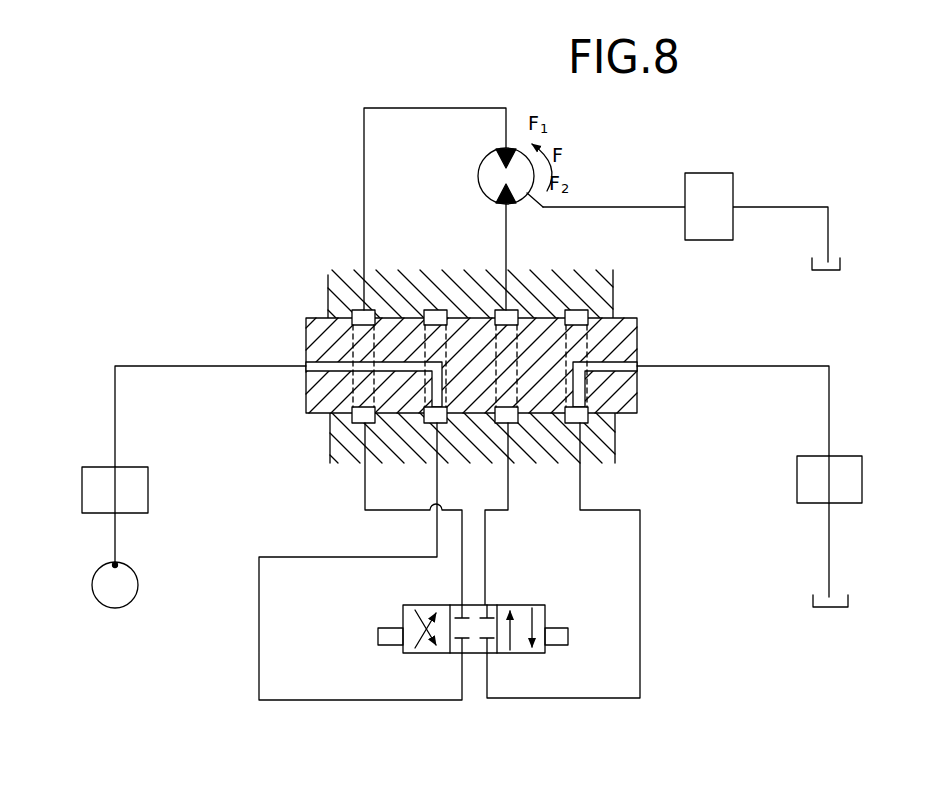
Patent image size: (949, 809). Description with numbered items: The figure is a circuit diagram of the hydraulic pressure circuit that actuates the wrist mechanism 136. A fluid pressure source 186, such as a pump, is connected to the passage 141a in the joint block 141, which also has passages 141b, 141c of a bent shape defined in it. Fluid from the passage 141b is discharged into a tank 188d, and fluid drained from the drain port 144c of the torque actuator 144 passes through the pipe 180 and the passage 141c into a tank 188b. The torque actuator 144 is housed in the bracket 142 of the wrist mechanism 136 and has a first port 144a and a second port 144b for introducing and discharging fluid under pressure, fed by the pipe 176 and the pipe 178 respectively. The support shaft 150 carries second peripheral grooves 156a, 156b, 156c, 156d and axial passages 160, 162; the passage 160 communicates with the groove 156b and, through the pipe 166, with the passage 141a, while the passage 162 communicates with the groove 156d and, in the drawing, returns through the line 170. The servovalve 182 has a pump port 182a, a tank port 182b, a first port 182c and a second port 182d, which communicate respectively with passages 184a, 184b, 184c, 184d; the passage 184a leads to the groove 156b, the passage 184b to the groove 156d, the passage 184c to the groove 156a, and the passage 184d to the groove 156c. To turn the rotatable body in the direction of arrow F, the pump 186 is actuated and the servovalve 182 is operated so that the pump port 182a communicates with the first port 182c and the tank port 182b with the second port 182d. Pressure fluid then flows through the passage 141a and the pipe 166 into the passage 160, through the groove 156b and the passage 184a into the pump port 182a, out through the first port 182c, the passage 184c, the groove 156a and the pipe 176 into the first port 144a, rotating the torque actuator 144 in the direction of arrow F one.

The wrist mechanism 136 is at (310, 148).
The joint block 141 is at (509, 334).
The passage 141a is at (118, 486).
The passage 141b is at (820, 478).
The passage 141c is at (718, 205).
The bracket 142 is at (590, 290).
The torque actuator 144 is at (482, 180).
The first port 144a is at (497, 150).
The second port 144b is at (500, 200).
The drain port 144c is at (528, 196).
The support shaft 150 is at (636, 332).
The second peripheral groove 156a is at (367, 424).
The second peripheral groove 156b is at (442, 425).
The second peripheral groove 156c is at (513, 425).
The second peripheral groove 156d is at (583, 423).
The passage 160 is at (322, 418).
The passage 162 is at (625, 370).
The pipe 166 is at (184, 370).
The conduit 170 is at (738, 360).
The pipe 176 is at (395, 107).
The pipe 178 is at (507, 252).
The pipe 180 is at (630, 206).
The servovalve 182 is at (488, 642).
The pump port 182a is at (458, 652).
The tank port 182b is at (487, 652).
The first port 182c is at (452, 605).
The second port 182d is at (539, 604).
The passage 184a is at (287, 562).
The passage 184b is at (640, 638).
The passage 184c is at (460, 540).
The passage 184d is at (542, 547).
The fluid pressure source 186 is at (128, 575).
The tank 188b is at (848, 263).
The tank 188d is at (852, 601).